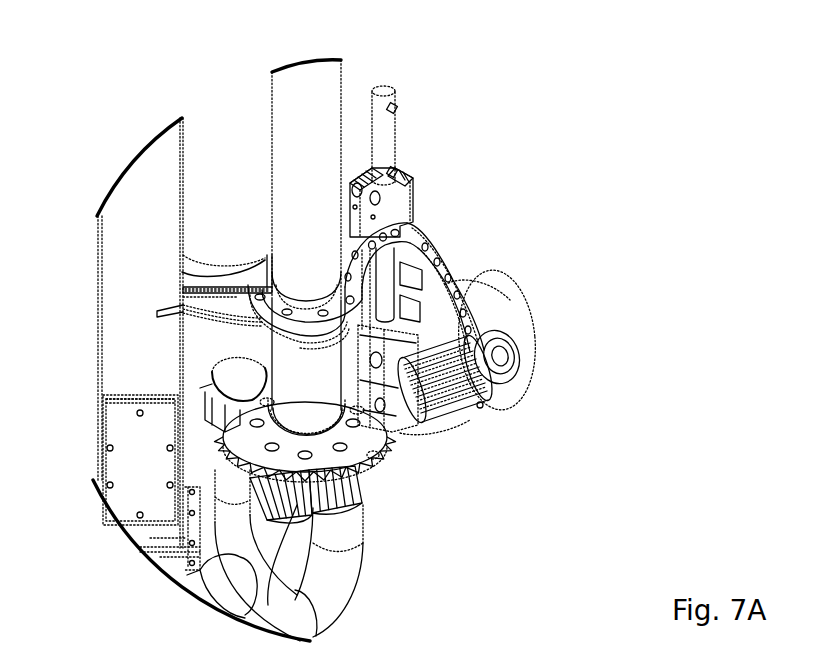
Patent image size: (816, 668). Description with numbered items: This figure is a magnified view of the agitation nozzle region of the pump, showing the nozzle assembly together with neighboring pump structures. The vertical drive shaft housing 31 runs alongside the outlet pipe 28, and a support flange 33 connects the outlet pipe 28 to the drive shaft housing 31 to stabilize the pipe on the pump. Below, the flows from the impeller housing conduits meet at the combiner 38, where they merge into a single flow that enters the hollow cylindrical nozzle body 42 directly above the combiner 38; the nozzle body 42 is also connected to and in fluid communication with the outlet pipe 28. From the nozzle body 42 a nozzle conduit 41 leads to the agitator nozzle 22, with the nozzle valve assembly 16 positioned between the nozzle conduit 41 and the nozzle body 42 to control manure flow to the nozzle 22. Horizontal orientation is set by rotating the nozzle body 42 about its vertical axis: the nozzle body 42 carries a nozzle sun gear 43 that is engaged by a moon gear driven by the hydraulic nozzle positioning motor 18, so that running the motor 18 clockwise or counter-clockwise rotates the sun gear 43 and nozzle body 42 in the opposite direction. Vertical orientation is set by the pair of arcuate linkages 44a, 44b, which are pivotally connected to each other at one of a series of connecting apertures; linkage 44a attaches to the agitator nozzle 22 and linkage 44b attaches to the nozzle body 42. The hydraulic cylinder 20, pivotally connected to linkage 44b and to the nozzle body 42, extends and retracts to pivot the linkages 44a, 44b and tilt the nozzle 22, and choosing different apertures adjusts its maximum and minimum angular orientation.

The nozzle valve assembly 16 is at (407, 193).
The hydraulic nozzle positioning motor 18 is at (235, 375).
The hydraulic cylinder 20 is at (388, 349).
The agitator nozzle 22 is at (504, 357).
The outlet pipe 28 is at (313, 78).
The drive shaft housing 31 is at (118, 252).
The support flange 33 is at (243, 283).
The combiner 38 is at (340, 487).
The nozzle conduit 41 is at (497, 300).
The nozzle body 42 is at (285, 352).
The nozzle sun gear 43 is at (357, 442).
The arcuate linkage 44a is at (447, 273).
The arcuate linkage 44b is at (405, 236).